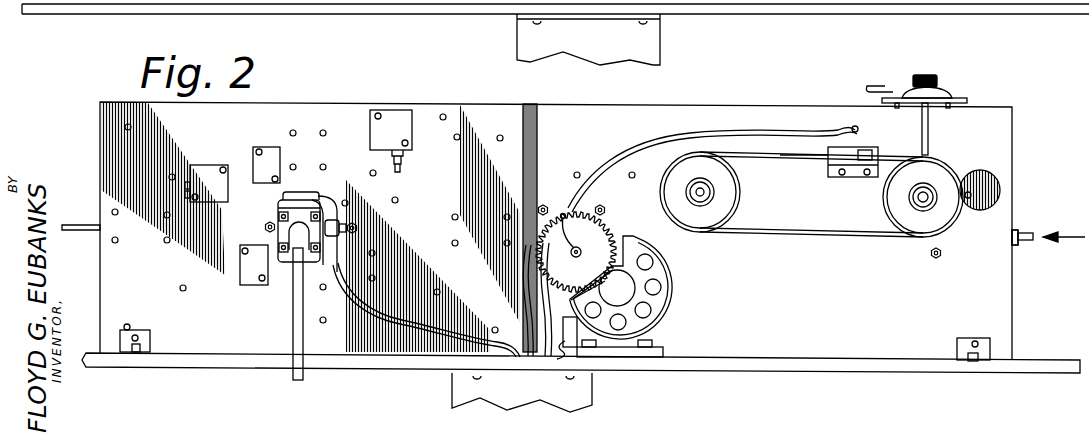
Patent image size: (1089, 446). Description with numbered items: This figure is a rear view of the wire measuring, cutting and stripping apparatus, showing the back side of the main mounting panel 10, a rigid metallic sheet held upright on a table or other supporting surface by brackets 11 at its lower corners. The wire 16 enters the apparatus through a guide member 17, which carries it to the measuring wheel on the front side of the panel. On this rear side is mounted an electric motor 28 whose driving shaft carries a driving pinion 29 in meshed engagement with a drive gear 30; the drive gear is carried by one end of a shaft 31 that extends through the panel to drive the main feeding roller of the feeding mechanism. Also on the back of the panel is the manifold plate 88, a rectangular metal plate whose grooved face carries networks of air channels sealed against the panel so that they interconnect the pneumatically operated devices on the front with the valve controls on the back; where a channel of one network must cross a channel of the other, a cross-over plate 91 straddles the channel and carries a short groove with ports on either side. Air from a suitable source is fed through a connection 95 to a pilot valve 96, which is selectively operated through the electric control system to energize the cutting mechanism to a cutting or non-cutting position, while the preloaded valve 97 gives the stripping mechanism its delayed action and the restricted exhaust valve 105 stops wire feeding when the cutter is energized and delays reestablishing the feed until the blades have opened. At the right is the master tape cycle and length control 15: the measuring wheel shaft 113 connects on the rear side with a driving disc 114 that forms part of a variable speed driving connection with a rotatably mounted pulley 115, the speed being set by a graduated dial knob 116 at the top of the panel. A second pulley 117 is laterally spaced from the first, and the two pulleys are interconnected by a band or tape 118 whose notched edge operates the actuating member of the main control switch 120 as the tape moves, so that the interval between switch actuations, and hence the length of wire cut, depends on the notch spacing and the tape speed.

The main mounting panel 10 is at (710, 117).
The brackets 11 is at (141, 330).
The master tape cycle and length control 15 is at (935, 152).
The wire 16 is at (85, 220).
The guide member 17 is at (1015, 240).
The electric motor 28 is at (660, 300).
The driving pinion 29 is at (576, 296).
The drive gear 30 is at (603, 236).
The shaft 31 is at (567, 208).
The manifold plate 88 is at (462, 185).
The cross-over plate 91 is at (272, 152).
The connection 95 is at (295, 335).
The pilot valve 96 is at (275, 218).
The valve 97 is at (211, 166).
The restricted exhaust valve 105 is at (404, 130).
The shaft 113 is at (972, 195).
The driving disc 114 is at (985, 180).
The pulley 115 is at (905, 195).
The dial knob 116 is at (940, 93).
The second pulley 117 is at (720, 186).
The band or tape 118 is at (803, 234).
The main control switch 120 is at (870, 150).